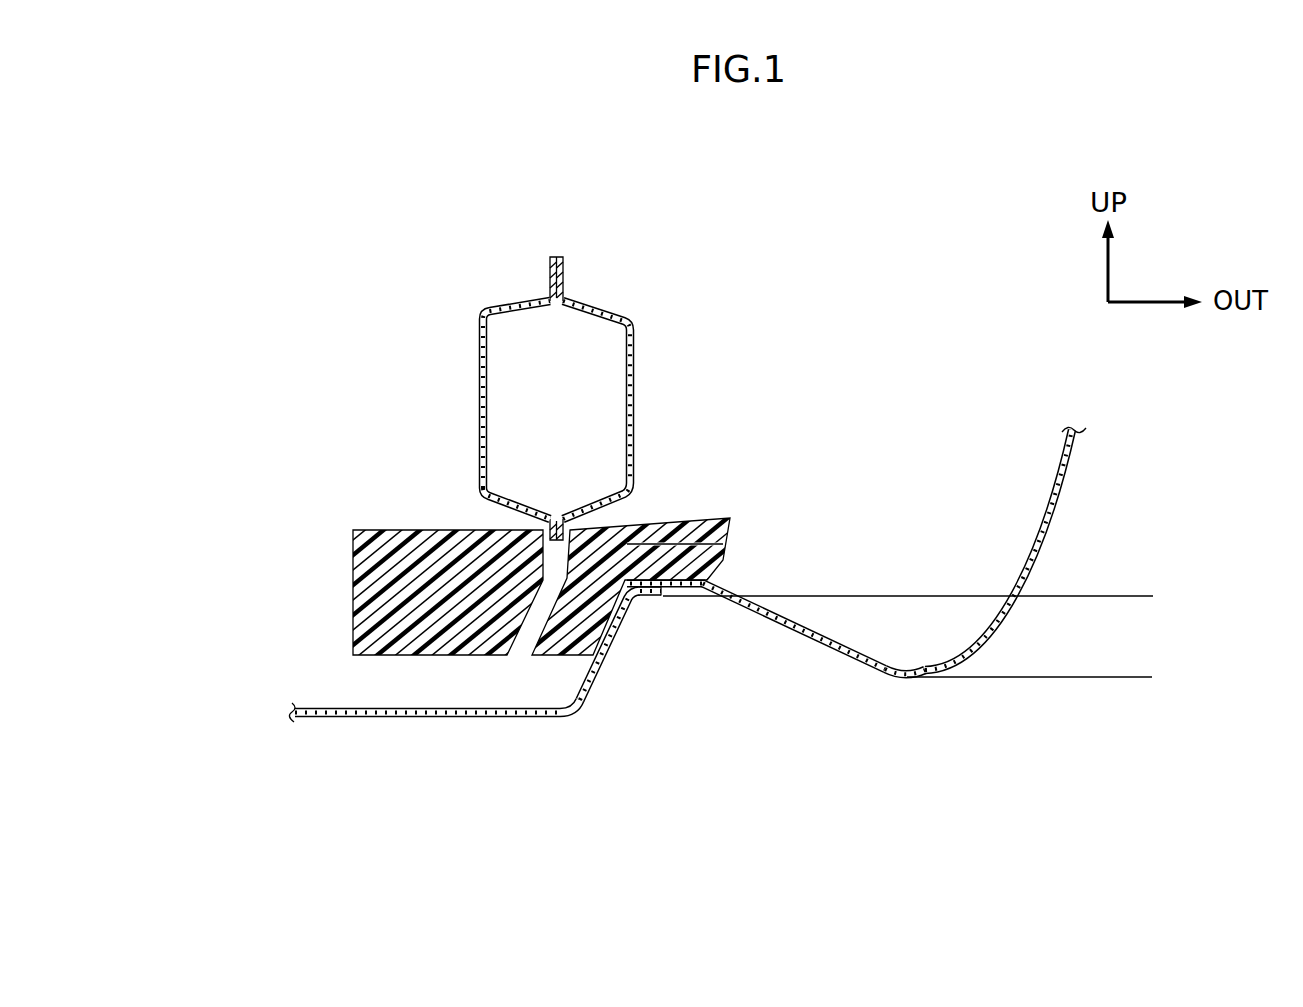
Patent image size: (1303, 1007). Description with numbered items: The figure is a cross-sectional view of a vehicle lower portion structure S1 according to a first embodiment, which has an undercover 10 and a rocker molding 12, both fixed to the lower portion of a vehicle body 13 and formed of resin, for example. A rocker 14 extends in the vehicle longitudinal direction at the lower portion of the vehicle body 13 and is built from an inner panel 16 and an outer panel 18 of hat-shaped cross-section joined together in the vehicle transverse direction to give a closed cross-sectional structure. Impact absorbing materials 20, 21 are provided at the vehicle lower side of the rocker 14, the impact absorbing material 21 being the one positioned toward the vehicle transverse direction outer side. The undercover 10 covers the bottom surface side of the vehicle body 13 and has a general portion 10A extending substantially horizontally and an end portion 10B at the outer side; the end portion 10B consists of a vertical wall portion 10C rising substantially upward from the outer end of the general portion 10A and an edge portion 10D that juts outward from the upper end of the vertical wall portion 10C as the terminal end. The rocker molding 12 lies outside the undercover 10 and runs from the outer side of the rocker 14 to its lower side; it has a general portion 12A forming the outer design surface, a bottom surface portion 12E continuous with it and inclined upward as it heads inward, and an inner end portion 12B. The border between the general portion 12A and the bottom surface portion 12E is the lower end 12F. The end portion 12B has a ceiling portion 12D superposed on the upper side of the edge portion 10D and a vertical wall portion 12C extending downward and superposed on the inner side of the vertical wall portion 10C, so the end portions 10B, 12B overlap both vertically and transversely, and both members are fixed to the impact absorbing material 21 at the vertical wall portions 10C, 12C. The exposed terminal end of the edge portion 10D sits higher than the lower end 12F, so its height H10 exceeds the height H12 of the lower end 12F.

The undercover 10 is at (404, 740).
The general portion 10A is at (520, 718).
The end portion 10B is at (715, 640).
The vertical wall portion 10C is at (622, 627).
The edge portion 10D is at (650, 593).
The rocker molding 12 is at (1087, 505).
The general portion 12A is at (1073, 463).
The end portion 12B is at (847, 488).
The vertical wall portion 12C is at (735, 540).
The ceiling portion 12D is at (727, 568).
The bottom surface portion 12E is at (837, 647).
The lower end 12F is at (907, 675).
The vehicle body 13 is at (632, 263).
The rocker 14 is at (496, 290).
The inner panel 16 is at (478, 392).
The outer panel 18 is at (633, 377).
The impact absorbing material 20 is at (437, 530).
The impact absorbing material 21 is at (657, 532).
The vehicle lower portion structure S1 is at (857, 246).
The height of the terminal end of the edge portion H10 is at (1127, 598).
The height of the lower end H12 is at (1127, 678).